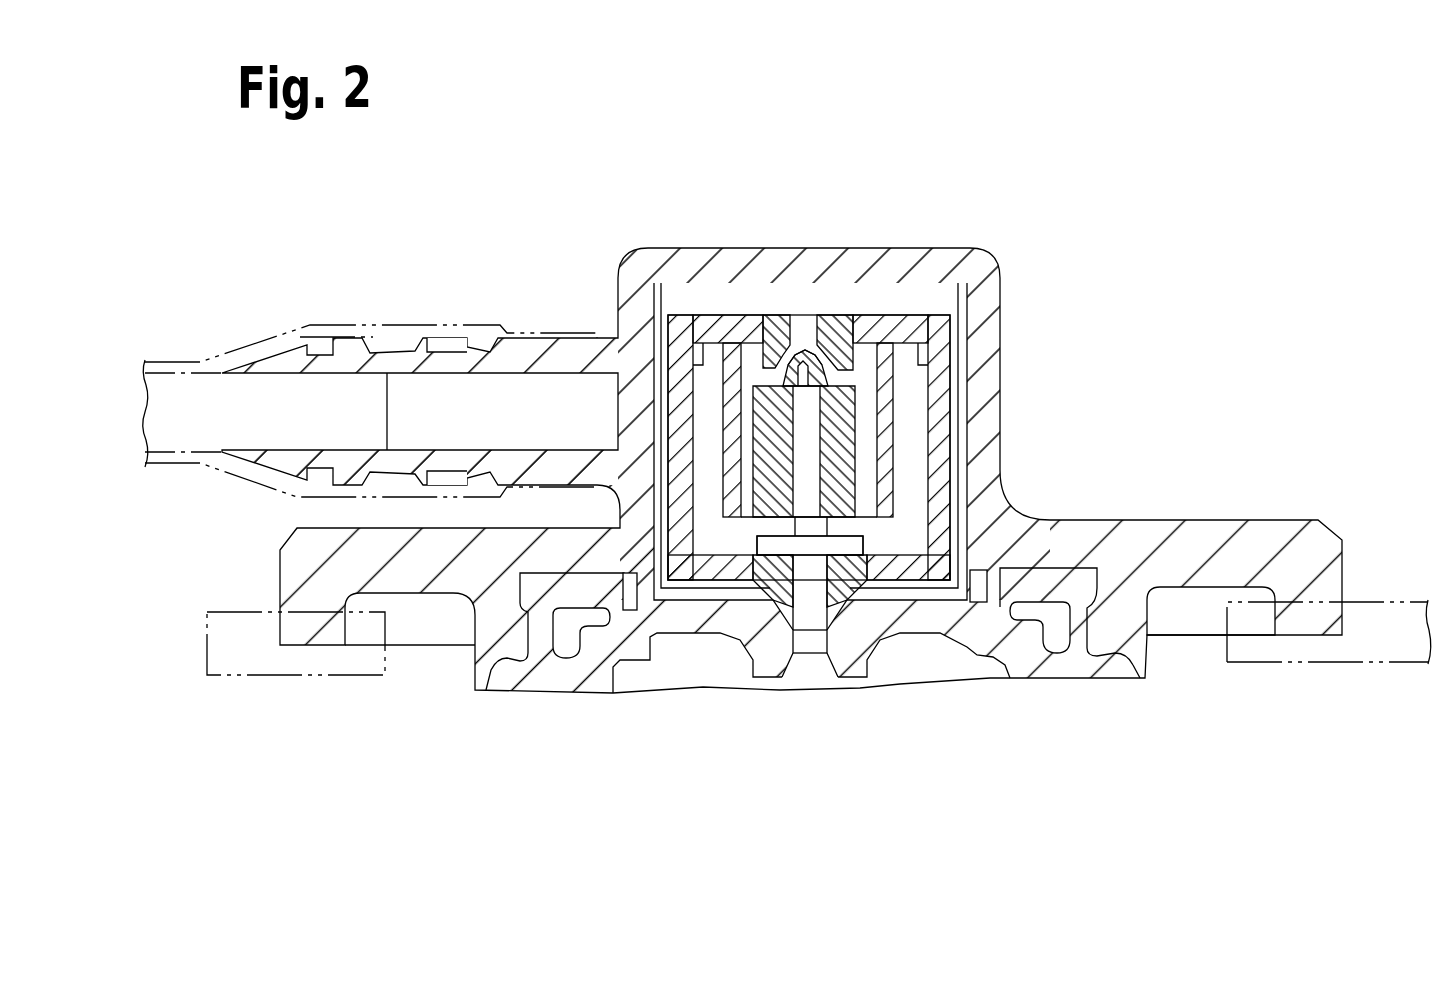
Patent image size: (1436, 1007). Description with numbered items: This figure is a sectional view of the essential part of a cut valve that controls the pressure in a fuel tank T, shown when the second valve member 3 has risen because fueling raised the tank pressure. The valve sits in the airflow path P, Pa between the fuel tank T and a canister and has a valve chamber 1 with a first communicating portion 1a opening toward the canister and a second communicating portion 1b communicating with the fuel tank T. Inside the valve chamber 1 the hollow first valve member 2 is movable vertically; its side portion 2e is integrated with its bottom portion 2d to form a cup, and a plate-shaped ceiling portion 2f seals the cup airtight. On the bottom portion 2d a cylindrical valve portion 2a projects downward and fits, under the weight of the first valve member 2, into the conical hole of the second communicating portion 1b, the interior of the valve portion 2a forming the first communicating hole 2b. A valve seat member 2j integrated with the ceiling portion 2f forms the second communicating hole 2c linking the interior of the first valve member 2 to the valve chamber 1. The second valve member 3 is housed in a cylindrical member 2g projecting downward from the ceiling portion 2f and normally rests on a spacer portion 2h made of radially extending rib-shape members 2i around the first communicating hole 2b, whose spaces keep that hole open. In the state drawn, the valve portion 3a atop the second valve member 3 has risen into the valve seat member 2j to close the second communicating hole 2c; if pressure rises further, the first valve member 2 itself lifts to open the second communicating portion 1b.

The valve chamber 1 is at (925, 287).
The first communicating portion 1a is at (655, 400).
The second communicating portion 1b is at (810, 668).
The first valve member 2 is at (950, 427).
The valve portion 2a is at (857, 597).
The first communicating hole 2b is at (773, 613).
The second communicating hole 2c is at (812, 336).
The bottom portion 2d is at (900, 563).
The side portion 2e is at (950, 463).
The ceiling portion 2f is at (863, 316).
The cylindrical member 2g is at (950, 390).
The spacer portion 2h is at (853, 548).
The rib-shape members 2i is at (810, 545).
The valve seat member 2j is at (955, 363).
The second valve member 3 is at (792, 342).
The valve portion 3a is at (804, 351).
The airflow path P is at (190, 380).
The hose end Pa is at (183, 412).
The fuel tank T is at (1368, 613).